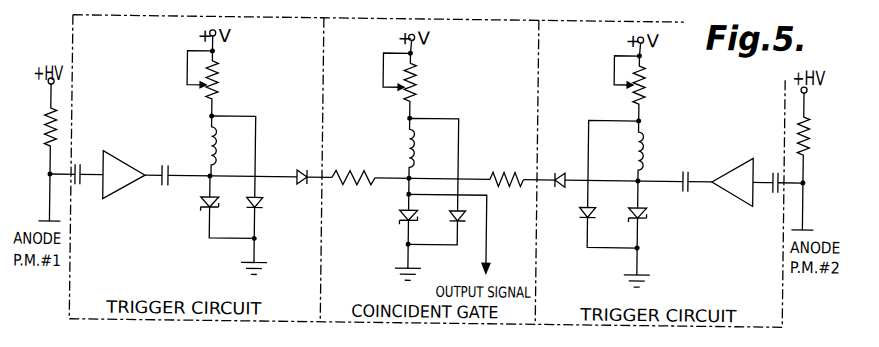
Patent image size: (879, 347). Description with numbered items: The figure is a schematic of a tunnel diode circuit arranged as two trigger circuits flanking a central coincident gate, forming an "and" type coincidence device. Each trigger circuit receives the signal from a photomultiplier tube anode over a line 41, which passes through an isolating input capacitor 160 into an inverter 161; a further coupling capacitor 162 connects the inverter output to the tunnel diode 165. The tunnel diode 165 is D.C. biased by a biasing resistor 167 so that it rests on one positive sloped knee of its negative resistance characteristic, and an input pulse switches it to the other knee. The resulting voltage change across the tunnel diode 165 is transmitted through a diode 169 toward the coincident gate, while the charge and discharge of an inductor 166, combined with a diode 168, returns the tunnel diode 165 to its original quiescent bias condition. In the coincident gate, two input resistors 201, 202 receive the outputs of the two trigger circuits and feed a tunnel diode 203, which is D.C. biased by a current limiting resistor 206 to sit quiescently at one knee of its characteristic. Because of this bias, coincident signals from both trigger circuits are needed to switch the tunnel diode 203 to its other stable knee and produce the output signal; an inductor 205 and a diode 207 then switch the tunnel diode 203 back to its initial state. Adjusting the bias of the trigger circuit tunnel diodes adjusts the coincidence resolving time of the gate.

The line 41 is at (61, 173).
The isolating input capacitor 160 is at (78, 186).
The inverter 161 is at (132, 165).
The coupling capacitor 162 is at (164, 186).
The tunnel diode 165 is at (202, 211).
The inductor 166 is at (208, 146).
The biasing resistor 167 is at (213, 82).
The diode 168 is at (260, 210).
The diode 169 is at (302, 169).
The input resistor 201 is at (351, 169).
The input resistor 202 is at (503, 167).
The tunnel diode 203 is at (400, 208).
The inductor 205 is at (406, 146).
The current limiting resistor 206 is at (417, 80).
The diode 207 is at (466, 217).